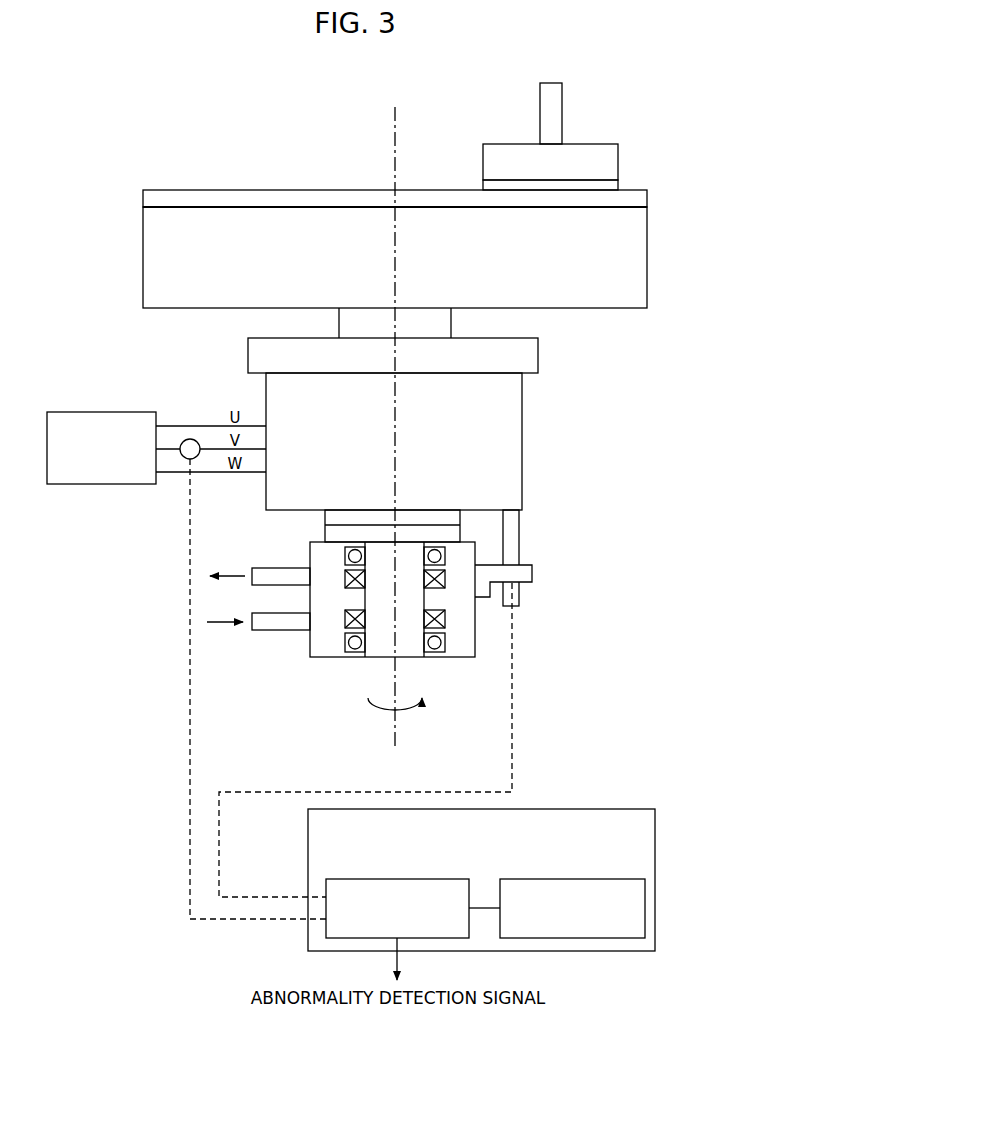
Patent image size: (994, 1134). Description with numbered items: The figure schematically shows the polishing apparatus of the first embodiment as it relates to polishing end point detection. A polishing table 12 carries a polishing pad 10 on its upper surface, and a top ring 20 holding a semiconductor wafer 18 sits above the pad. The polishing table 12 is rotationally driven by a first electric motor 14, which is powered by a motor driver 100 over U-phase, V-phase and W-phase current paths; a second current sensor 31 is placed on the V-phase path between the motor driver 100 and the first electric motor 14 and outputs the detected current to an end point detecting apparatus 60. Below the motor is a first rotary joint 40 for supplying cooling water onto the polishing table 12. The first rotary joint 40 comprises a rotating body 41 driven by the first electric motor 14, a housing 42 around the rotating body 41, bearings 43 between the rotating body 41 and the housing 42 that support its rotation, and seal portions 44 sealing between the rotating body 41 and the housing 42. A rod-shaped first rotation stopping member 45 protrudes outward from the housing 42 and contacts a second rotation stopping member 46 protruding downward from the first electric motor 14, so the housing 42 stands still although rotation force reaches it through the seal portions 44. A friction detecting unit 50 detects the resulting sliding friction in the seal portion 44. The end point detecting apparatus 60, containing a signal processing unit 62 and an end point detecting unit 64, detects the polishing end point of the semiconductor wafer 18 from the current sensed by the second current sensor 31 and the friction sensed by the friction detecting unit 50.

The polishing pad 10 is at (164, 190).
The polishing table 12 is at (152, 260).
The first electric motor 14 is at (517, 447).
The semiconductor wafer 18 is at (608, 188).
The top ring 20 is at (593, 150).
The second current sensor 31 is at (190, 438).
The first rotary joint 40 is at (344, 638).
The rotating body 41 is at (410, 643).
The housing 42 is at (337, 648).
The bearings 43 is at (345, 555).
The seal portions 44 is at (345, 617).
The first rotation stopping member 45 is at (535, 573).
The second rotation stopping member 46 is at (518, 541).
The friction detecting unit 50 is at (525, 618).
The end point detecting apparatus 60 is at (481, 855).
The signal processing unit 62 is at (398, 879).
The end point detecting unit 64 is at (575, 879).
The motor driver 100 is at (101, 412).